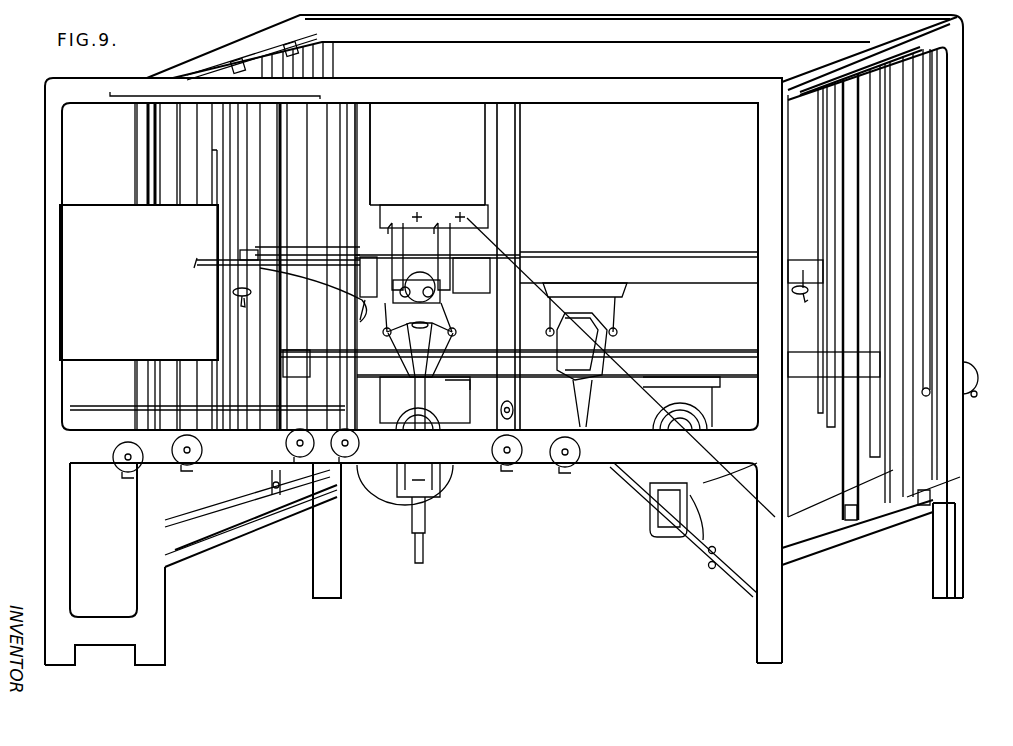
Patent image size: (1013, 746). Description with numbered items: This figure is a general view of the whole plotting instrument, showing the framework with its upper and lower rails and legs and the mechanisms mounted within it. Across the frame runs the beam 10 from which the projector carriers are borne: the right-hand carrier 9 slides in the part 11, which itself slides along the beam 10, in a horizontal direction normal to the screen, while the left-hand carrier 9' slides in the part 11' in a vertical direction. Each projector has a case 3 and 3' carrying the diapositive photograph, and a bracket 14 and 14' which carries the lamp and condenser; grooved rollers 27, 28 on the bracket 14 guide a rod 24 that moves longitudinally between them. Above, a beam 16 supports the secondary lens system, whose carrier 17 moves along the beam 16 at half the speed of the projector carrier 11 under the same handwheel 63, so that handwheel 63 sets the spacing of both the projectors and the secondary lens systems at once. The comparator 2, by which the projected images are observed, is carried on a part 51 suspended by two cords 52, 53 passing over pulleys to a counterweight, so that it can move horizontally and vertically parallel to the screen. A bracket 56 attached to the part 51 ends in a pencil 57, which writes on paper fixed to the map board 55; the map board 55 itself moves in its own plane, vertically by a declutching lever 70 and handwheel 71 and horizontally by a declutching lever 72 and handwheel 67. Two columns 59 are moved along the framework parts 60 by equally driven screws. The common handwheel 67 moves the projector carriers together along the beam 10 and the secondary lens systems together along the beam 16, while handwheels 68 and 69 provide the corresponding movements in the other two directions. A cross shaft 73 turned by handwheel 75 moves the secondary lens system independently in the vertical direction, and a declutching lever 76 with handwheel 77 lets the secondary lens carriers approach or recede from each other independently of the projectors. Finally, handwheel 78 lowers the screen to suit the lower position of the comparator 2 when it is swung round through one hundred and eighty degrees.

The comparator 2 is at (445, 300).
The case of the projector 3 is at (700, 440).
The case of the projector 3' is at (405, 502).
The carrier 9 is at (606, 370).
The carrier 9' is at (432, 403).
The beam 10 is at (660, 352).
The part 11 is at (696, 402).
The part 11' is at (463, 373).
The bracket 14 is at (723, 501).
The bracket 14' is at (441, 530).
The beam 16 is at (725, 270).
The carrier of the secondary lens system 17 is at (610, 292).
The rod 24 is at (645, 488).
The grooved roller 27 is at (705, 550).
The grooved roller 28 is at (710, 568).
The part 51 is at (437, 260).
The cord or wire 52 is at (487, 146).
The cord or wire 53 is at (370, 157).
The map board 55 is at (97, 206).
The bracket 56 is at (352, 298).
The pencil 57 is at (196, 262).
The column 59 is at (300, 500).
The part of the framework 60 is at (196, 548).
The handwheel 63 is at (968, 362).
The handwheel 67 is at (286, 444).
The handwheel 68 is at (189, 468).
The handwheel 69 is at (116, 463).
The declutching lever 70 is at (322, 468).
The handwheel 71 is at (360, 444).
The declutching lever 72 is at (275, 490).
The cross shaft 73 is at (622, 257).
The handwheel 75 is at (236, 293).
The declutching lever 76 is at (800, 259).
The handwheel 77 is at (800, 298).
The handwheel 78 is at (515, 407).